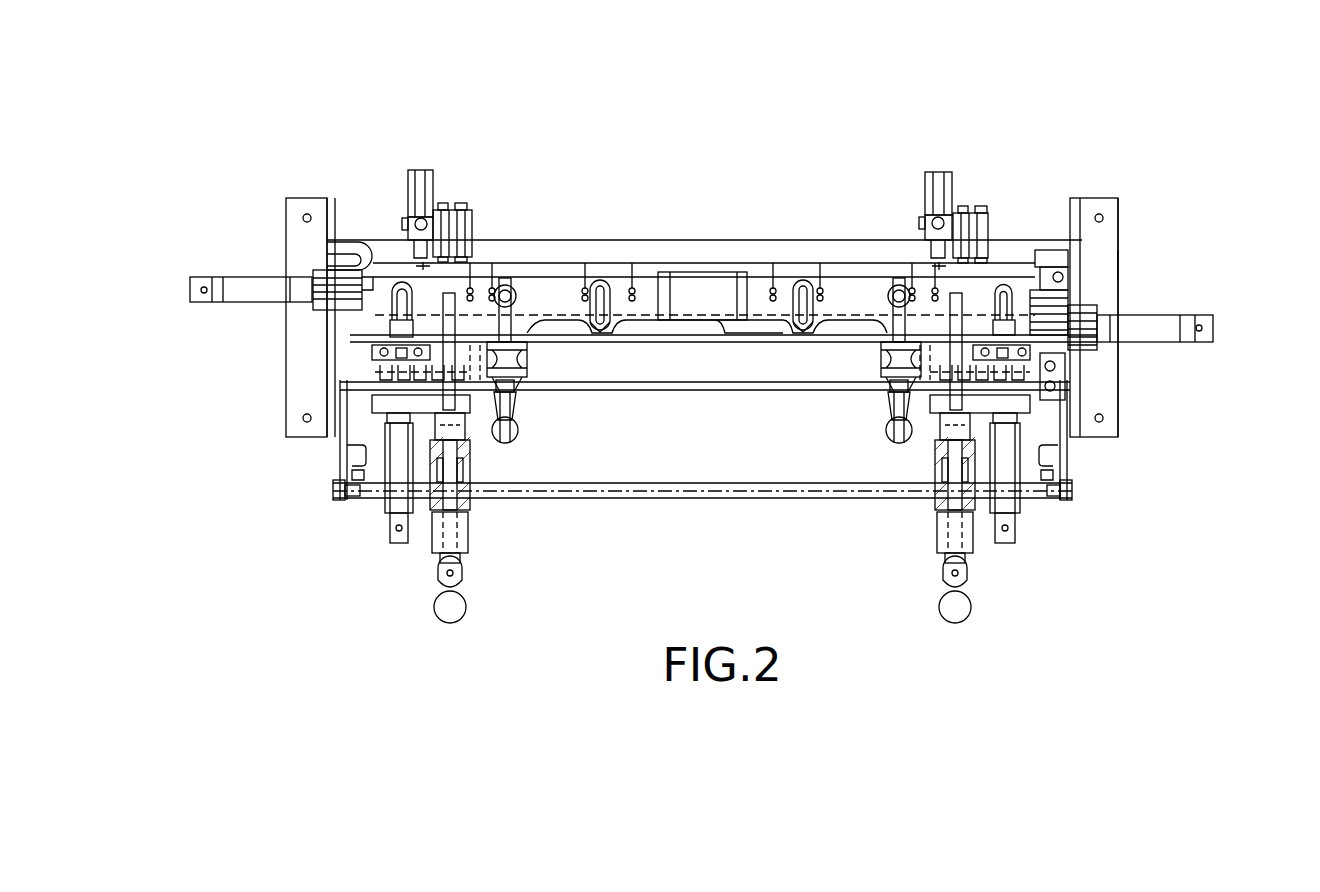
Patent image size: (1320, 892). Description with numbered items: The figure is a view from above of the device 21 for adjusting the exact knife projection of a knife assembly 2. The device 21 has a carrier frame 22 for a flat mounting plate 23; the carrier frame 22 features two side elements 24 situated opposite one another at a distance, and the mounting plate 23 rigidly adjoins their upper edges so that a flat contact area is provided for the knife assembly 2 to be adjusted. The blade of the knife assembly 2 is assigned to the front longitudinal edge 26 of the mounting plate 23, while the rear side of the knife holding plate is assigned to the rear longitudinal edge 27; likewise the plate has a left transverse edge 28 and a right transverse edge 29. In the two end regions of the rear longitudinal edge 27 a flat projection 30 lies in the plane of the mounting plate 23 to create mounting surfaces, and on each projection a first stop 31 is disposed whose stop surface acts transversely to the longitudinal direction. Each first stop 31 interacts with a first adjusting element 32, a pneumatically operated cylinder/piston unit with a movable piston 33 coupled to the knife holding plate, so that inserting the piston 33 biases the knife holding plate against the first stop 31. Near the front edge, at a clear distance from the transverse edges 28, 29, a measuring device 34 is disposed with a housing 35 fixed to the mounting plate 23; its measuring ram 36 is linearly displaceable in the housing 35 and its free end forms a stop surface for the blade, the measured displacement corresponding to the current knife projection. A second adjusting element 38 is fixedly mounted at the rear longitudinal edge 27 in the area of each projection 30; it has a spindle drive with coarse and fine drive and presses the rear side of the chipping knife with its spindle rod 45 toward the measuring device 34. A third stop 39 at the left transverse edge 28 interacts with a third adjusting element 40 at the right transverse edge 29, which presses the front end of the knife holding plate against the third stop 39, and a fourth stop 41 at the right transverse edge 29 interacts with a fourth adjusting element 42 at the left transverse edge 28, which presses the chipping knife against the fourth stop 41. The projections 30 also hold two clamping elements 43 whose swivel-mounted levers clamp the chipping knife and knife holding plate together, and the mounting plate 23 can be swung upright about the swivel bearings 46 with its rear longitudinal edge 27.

The knife assembly 2 is at (538, 262).
The device 21 is at (1182, 128).
The carrier frame 22 is at (1140, 261).
The mounting plate 23 is at (737, 255).
The side elements 24 is at (332, 198).
The front longitudinal edge 26 is at (610, 240).
The rear longitudinal edge 27 is at (722, 322).
The left transverse edge 28 is at (328, 353).
The right transverse edge 29 is at (1073, 369).
The flat projection 30 is at (523, 383).
The first stop 31 is at (384, 356).
The first adjusting element 32 is at (385, 514).
The piston 33 is at (398, 282).
The measuring device 34 is at (428, 160).
The housing 35 is at (430, 188).
The measuring ram 36 is at (426, 254).
The second adjusting element 38 is at (432, 558).
The third stop 39 is at (337, 313).
The third adjusting element 40 is at (1215, 327).
The fourth stop 41 is at (1125, 265).
The fourth adjusting element 42 is at (232, 275).
The clamping elements 43 is at (502, 445).
The spindle rods 45 is at (456, 320).
The swivel bearings 46 is at (320, 258).